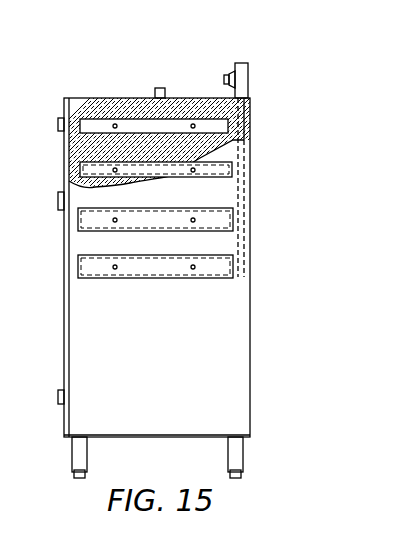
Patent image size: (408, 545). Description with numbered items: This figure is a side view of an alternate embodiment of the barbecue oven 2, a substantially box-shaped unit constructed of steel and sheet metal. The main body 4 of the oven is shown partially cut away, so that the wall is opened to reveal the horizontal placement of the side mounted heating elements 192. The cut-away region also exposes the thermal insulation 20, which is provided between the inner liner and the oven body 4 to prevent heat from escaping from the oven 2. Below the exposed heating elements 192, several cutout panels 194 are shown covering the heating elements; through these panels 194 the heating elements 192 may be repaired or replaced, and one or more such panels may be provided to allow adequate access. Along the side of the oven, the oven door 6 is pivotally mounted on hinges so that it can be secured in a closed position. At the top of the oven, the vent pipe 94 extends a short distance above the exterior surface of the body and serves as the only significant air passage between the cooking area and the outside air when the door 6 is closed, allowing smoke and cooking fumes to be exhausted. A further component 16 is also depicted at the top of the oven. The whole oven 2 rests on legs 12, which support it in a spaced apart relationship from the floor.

The barbecue oven 2 is at (140, 88).
The main body 4 is at (234, 318).
The oven door 6 is at (63, 297).
The legs 12 is at (228, 463).
The control unit 16 is at (259, 70).
The thermal insulation 20 is at (93, 98).
The vent pipe 94 is at (165, 88).
The heating elements 192 is at (80, 134).
The cutout panels 194 is at (225, 258).